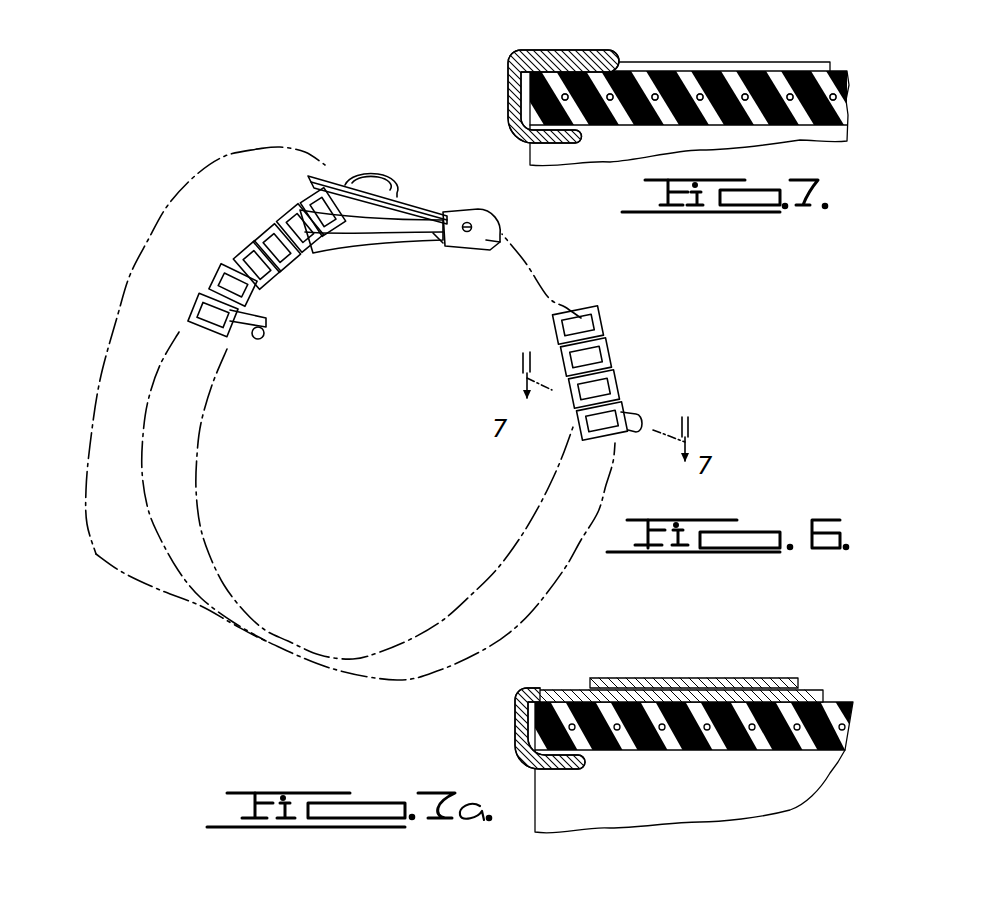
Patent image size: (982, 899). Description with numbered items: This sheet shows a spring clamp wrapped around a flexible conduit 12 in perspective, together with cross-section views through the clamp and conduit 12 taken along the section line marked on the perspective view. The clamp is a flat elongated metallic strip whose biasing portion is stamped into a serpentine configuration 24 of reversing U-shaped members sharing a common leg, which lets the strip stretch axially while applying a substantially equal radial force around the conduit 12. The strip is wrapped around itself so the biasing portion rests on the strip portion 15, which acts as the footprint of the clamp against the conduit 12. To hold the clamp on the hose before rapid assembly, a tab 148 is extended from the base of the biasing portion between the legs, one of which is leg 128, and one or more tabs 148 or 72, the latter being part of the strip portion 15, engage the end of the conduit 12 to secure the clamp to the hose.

In FIG. 7, the flexible conduit 12 is at (815, 111).
In FIG. 7A, the flexible conduit 12 is at (672, 742).
In FIG. 7, the serpentine configuration 24 is at (782, 58).
In FIG. 7A, the serpentine configuration 24 is at (739, 672).
In FIG. 7, the leg 128 is at (679, 61).
In FIG. 7, the tab 148 is at (509, 55).
In FIG. 6, the tab 72 is at (260, 348).
In FIG. 7A, the tab 72 is at (503, 709).
In FIG. 7A, the strip portion 15 is at (801, 690).